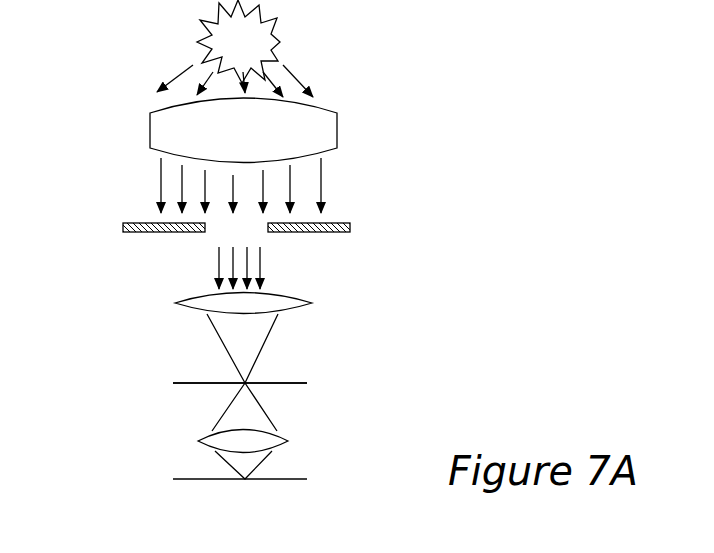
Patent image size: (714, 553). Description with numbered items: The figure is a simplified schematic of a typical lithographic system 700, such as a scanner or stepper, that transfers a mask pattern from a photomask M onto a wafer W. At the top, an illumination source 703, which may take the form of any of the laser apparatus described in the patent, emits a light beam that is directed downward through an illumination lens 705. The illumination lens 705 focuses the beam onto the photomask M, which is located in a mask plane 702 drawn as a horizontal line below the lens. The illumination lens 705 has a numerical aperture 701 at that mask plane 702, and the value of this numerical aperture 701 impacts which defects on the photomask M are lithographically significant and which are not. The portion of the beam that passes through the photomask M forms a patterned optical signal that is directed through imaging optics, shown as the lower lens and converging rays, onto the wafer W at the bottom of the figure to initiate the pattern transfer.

The lithographic system 700 is at (363, 35).
The illumination source 703 is at (200, 40).
The illumination lens 705 is at (178, 303).
The numerical aperture 701 is at (268, 337).
The mask plane 702 is at (162, 382).
The photomask M is at (290, 383).
The wafer W is at (198, 479).